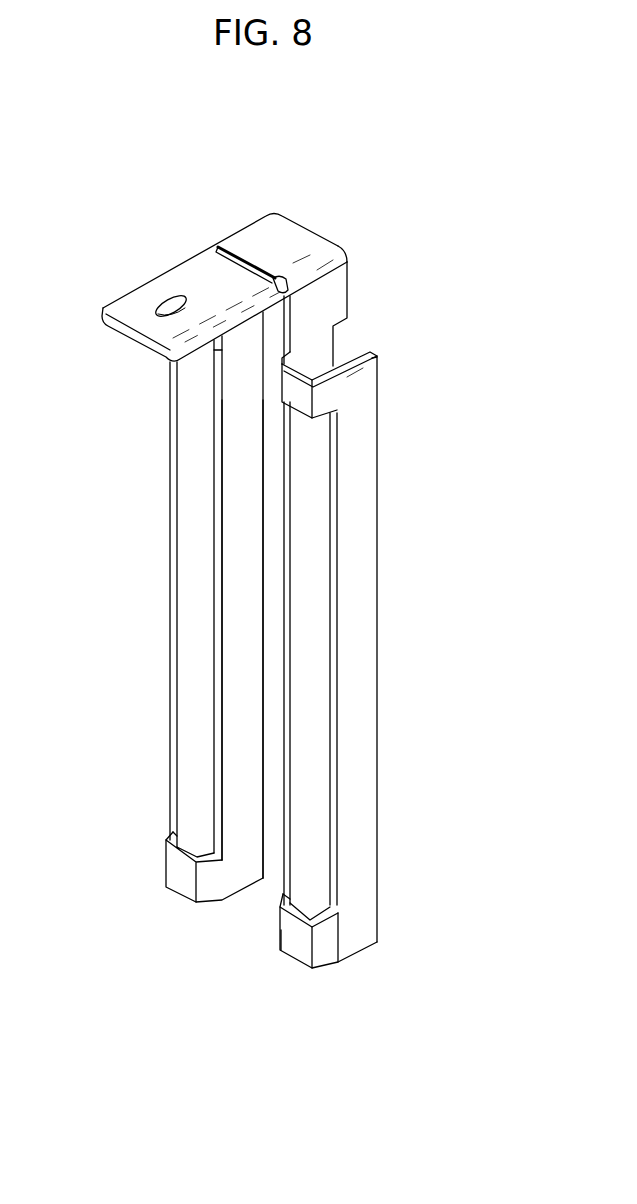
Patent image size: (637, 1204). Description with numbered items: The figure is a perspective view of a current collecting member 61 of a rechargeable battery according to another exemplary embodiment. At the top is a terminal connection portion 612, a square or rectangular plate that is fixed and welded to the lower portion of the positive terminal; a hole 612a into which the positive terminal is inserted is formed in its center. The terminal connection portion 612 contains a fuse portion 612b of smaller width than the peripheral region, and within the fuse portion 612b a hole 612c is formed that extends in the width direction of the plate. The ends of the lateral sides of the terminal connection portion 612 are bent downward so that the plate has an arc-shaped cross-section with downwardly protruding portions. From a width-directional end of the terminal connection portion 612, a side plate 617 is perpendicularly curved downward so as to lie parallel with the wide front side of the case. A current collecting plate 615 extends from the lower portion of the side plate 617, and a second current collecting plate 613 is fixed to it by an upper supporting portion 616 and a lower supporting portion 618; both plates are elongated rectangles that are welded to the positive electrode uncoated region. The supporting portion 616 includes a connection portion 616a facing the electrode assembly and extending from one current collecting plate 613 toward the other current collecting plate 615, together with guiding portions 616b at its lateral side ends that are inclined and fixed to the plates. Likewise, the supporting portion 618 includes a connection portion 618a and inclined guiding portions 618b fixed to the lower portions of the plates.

The current collecting member 61 is at (312, 218).
The terminal connection portion 612 is at (200, 273).
The hole 612a is at (163, 310).
The fuse portion 612b is at (318, 272).
The hole 612c is at (243, 260).
The current collecting plate 613 is at (188, 582).
The current collecting plate 615 is at (243, 640).
The supporting portion 616 is at (288, 386).
The connection portion 616a is at (300, 405).
The guiding portions 616b is at (327, 402).
The side plate 617 is at (318, 305).
The supporting portion 618 is at (293, 930).
The connection portion 618a is at (297, 947).
The guiding portions 618b is at (323, 950).